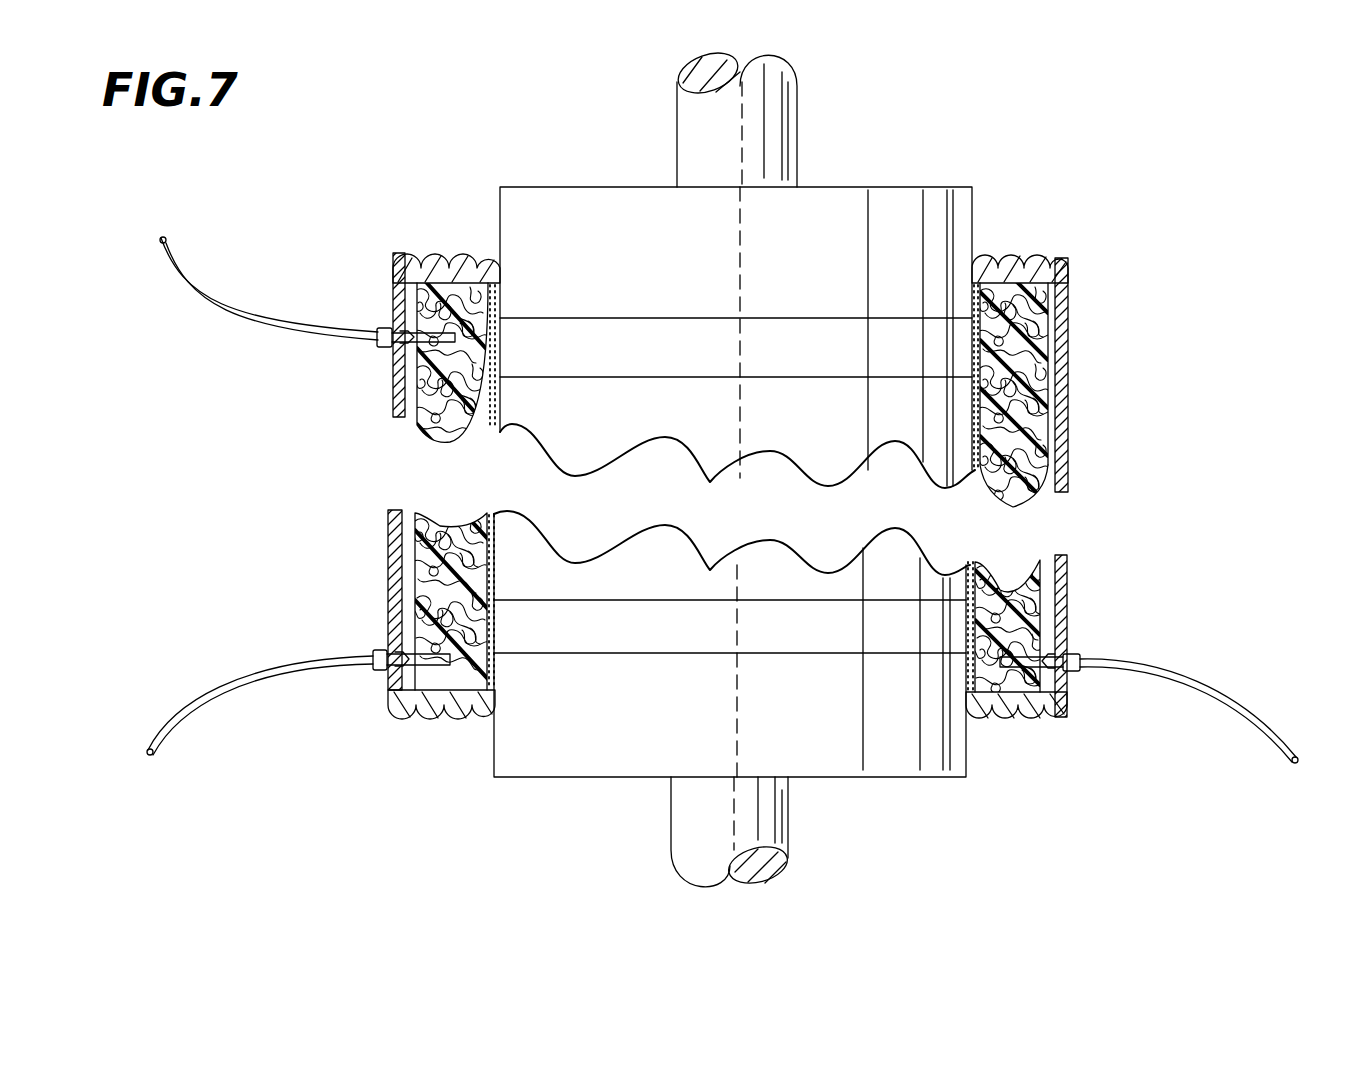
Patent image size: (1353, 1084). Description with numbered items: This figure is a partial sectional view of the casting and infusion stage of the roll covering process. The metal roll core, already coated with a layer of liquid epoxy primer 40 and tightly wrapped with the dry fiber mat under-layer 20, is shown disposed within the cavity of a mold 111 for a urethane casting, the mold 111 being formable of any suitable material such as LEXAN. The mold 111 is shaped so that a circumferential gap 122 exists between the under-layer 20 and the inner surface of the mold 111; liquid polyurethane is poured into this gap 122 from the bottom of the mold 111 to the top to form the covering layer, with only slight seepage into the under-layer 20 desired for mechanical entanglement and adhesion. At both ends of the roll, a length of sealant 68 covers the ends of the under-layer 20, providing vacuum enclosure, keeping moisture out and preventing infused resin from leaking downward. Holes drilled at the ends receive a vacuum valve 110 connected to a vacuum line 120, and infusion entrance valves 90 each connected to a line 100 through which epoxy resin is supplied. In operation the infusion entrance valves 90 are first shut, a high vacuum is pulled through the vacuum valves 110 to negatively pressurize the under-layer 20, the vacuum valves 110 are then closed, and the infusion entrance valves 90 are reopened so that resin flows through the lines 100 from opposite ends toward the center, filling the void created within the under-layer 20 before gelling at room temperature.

The fiber mat under-layer 20 is at (1020, 345).
The liquid epoxy primer 40 is at (1040, 462).
The sealant 68 is at (1010, 262).
The infusion entrance valve 90 is at (372, 675).
The line 100 is at (242, 672).
The vacuum valve 110 is at (385, 352).
The mold 111 is at (1068, 390).
The vacuum line 120 is at (210, 292).
The circumferential gap 122 is at (1050, 430).